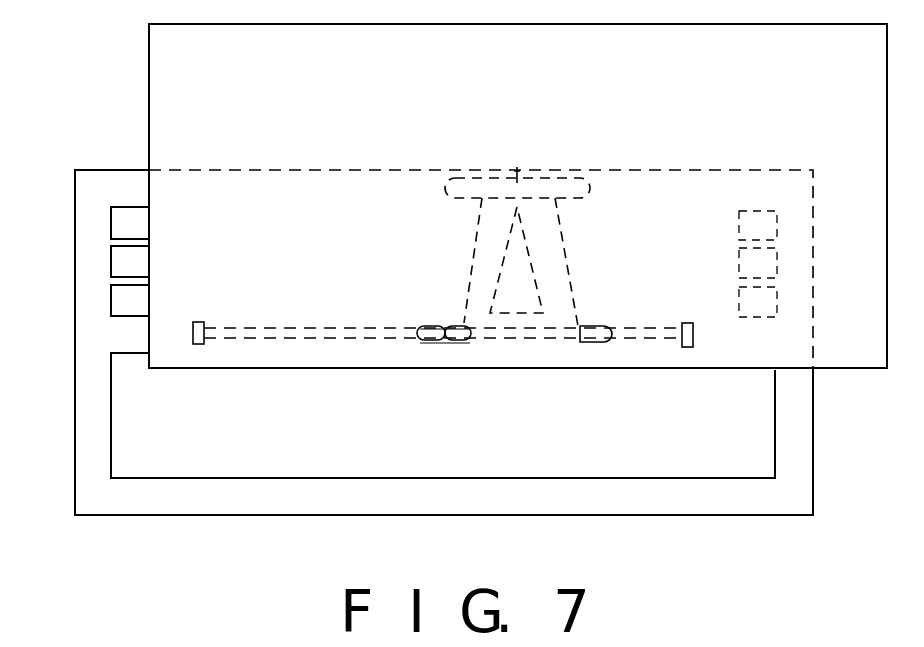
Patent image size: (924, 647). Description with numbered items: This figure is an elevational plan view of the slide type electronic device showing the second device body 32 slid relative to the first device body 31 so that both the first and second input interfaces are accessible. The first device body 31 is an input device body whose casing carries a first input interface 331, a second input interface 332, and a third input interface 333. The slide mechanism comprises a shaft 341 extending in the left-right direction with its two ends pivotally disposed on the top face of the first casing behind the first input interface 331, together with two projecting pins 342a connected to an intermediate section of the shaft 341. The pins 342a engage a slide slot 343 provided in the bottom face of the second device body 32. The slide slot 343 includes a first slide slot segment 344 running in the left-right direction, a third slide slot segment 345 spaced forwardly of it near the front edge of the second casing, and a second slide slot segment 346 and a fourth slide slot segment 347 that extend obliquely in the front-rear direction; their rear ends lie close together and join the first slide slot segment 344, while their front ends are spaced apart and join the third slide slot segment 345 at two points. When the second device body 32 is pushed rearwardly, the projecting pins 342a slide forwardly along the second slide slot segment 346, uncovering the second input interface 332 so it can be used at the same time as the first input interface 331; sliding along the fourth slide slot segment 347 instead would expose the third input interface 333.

The first device body 31 is at (442, 325).
The second device body 32 is at (180, 110).
The first input interface 331 is at (601, 457).
The second input interface 332 is at (125, 229).
The third input interface 333 is at (762, 312).
The shaft 341 is at (305, 328).
The projecting pins 342a is at (448, 327).
The slide slot 343 is at (520, 155).
The first slide slot segment 344 is at (553, 177).
The third slide slot segment 345 is at (513, 343).
The second slide slot segment 346 is at (480, 241).
The fourth slide slot segment 347 is at (550, 272).